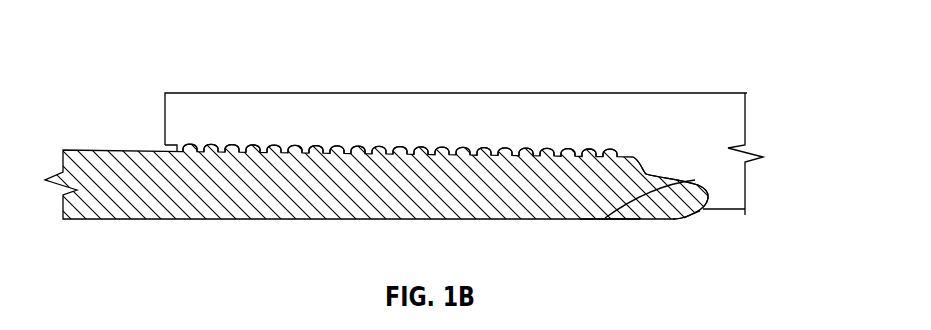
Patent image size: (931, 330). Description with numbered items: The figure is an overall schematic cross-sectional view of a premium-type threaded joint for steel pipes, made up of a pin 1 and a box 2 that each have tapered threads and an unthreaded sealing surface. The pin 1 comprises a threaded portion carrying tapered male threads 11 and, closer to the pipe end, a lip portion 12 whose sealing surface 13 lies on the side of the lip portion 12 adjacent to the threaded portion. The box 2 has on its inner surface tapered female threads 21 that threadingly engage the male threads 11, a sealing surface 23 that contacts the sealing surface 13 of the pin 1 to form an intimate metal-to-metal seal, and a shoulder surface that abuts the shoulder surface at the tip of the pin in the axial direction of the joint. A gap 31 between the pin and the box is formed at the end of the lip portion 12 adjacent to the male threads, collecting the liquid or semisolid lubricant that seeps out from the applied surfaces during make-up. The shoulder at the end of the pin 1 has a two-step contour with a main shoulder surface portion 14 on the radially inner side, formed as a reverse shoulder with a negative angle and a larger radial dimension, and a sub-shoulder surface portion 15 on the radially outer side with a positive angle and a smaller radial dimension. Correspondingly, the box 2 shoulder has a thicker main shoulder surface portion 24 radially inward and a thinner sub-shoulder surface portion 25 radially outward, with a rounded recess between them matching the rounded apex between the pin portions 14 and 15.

The pin 1 is at (200, 208).
The male threads 11 is at (395, 160).
The box 2 is at (677, 100).
The female threads 21 is at (405, 152).
The gap 31 is at (610, 152).
The sealing surface 23 is at (647, 172).
The sub-shoulder surface portion 25 is at (698, 178).
The main shoulder surface portion 24 is at (707, 196).
The lip portion 12 is at (634, 207).
The sealing surface 13 is at (606, 209).
The sub-shoulder surface portion 15 is at (664, 209).
The main shoulder surface portion 14 is at (696, 209).